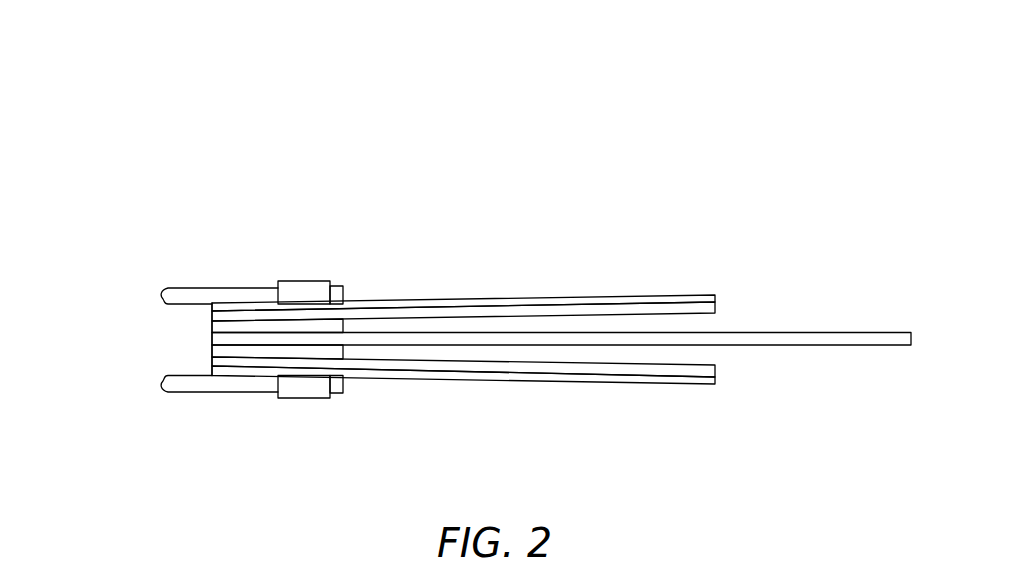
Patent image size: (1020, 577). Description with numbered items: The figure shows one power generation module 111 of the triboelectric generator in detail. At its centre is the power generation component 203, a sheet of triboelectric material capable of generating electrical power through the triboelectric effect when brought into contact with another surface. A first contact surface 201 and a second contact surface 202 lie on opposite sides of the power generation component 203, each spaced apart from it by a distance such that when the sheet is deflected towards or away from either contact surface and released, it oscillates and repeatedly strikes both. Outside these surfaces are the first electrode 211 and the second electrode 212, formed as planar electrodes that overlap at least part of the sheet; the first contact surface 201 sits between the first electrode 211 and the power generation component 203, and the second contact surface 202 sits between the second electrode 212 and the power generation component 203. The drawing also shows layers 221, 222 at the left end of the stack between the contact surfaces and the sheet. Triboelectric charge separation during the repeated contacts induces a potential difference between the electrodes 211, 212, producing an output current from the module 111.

The power generation module 111 is at (231, 191).
The first contact surface 201 is at (628, 298).
The second contact surface 202 is at (629, 381).
The power generation component 203 is at (830, 333).
The first electrode 211 is at (463, 298).
The second electrode 212 is at (463, 383).
The first adhesive layer 221 is at (212, 327).
The second adhesive layer 222 is at (212, 351).